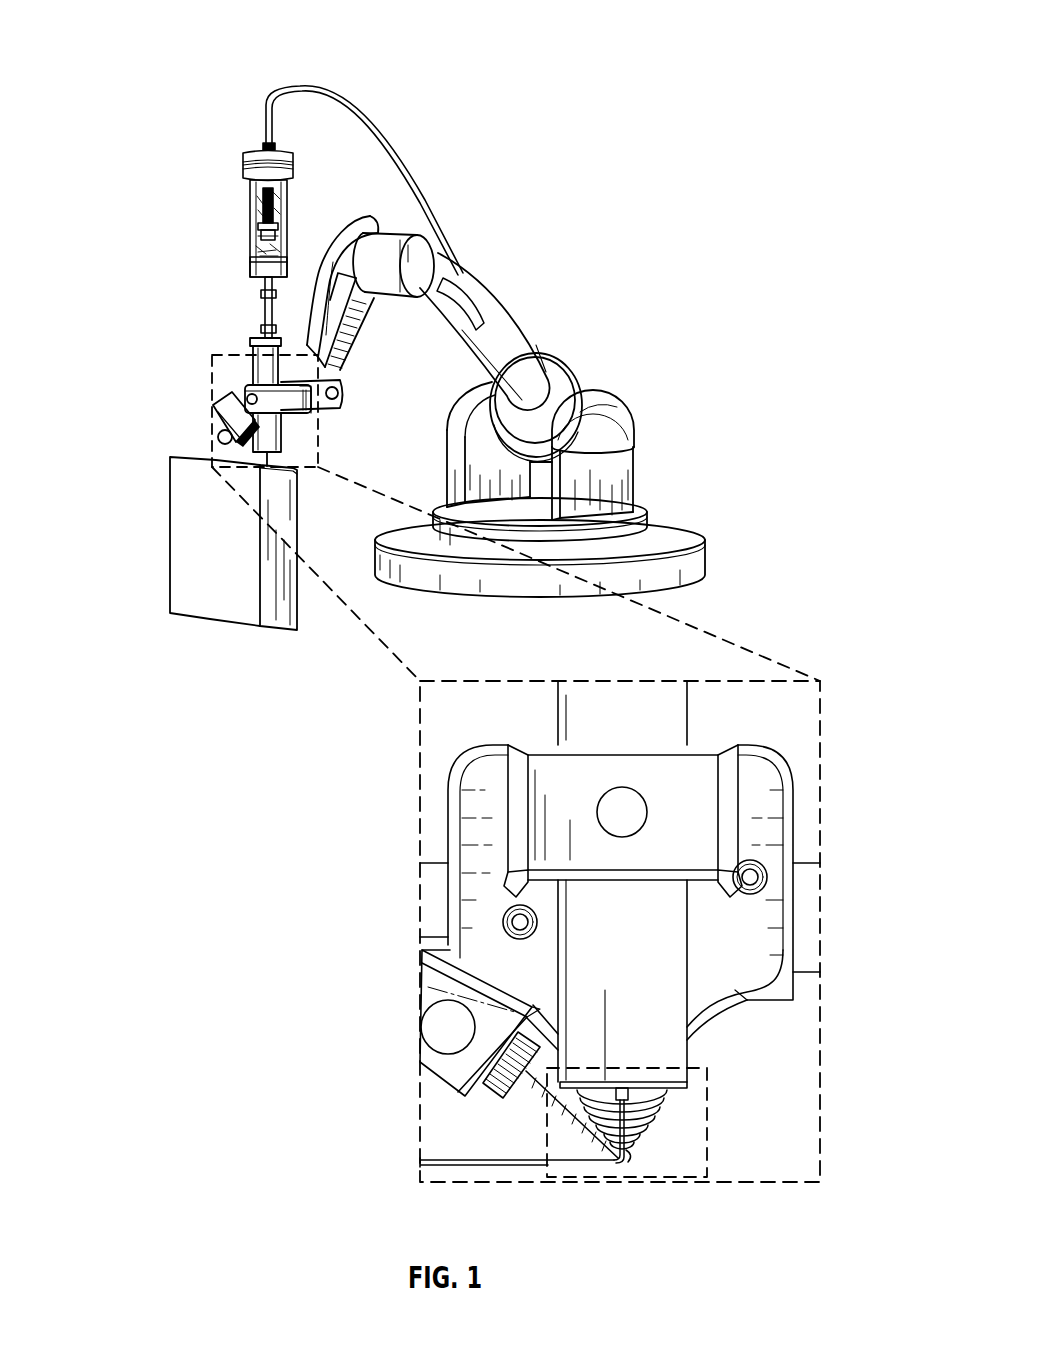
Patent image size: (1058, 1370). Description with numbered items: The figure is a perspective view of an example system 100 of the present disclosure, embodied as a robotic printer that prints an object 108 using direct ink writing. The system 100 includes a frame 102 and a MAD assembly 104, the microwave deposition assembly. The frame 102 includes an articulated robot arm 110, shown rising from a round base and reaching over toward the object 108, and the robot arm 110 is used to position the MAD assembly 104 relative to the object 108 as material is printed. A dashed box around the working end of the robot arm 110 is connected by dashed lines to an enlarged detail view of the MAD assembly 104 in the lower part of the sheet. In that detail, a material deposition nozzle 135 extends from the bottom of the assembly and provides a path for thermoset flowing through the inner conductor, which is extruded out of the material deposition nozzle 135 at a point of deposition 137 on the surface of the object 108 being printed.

The system 100 is at (684, 48).
The frame 102 is at (615, 346).
The MAD assembly 104 is at (188, 170).
The object 108 is at (162, 447).
The articulated robot arm 110 is at (513, 296).
The material deposition nozzle 135 is at (668, 1103).
The point of deposition 137 is at (612, 1162).